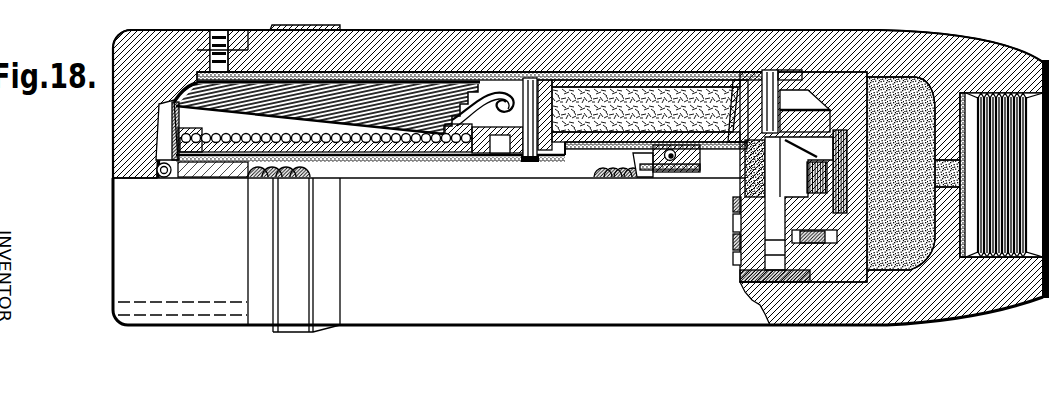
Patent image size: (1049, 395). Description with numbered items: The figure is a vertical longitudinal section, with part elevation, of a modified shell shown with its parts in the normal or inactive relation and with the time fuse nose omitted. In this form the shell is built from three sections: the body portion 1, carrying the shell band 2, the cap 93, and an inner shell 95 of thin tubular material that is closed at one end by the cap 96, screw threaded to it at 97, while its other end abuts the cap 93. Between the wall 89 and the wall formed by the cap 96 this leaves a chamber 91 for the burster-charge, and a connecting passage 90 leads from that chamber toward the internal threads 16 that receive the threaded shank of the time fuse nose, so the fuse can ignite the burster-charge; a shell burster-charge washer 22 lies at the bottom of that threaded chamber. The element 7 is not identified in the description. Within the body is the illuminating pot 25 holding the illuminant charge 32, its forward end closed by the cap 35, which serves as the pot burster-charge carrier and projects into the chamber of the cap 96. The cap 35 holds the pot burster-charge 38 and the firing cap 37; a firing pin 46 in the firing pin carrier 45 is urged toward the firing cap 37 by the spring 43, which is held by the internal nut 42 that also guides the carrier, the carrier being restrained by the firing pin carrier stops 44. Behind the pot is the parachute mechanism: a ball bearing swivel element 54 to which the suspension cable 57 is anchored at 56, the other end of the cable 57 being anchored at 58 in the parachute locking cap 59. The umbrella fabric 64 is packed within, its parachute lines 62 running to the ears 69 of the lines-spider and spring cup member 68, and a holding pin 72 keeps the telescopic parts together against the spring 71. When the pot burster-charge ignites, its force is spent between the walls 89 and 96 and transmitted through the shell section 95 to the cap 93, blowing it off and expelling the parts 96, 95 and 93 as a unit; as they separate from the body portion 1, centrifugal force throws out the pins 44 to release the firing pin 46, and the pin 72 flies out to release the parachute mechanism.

The body portion of the shell 1 is at (288, 255).
The shell band 2 is at (345, 42).
The head wall 7 is at (358, 50).
The internal threads 16 is at (1004, 159).
The shell burster-charge washer 22 is at (965, 243).
The illuminating pot 25 is at (576, 72).
The illuminant charge 32 is at (674, 72).
The cap (pot burster-charge carrier) 35 is at (745, 243).
The firing cap 37 is at (745, 208).
The pot burster-charge 38 is at (745, 225).
The internal nut 42 is at (760, 275).
The spring 43 is at (800, 243).
The firing pin carrier stops 44 is at (769, 70).
The firing pin carrier 45 is at (766, 172).
The firing pin 46 is at (887, 243).
The ball bearing swivel element 54 is at (652, 173).
The cable anchorage 56 is at (710, 163).
The suspension cable 57 is at (601, 172).
The cable anchorage 58 is at (156, 173).
The parachute locking cap 59 is at (165, 144).
The parachute lines 62 is at (487, 82).
The umbrella fabric 64 is at (428, 98).
The parachute lines-spider and spring cup member 68 is at (472, 153).
The ears 69 is at (508, 130).
The spring 71 is at (416, 160).
The holding pin 72 is at (529, 164).
The wall 89 is at (943, 167).
The connecting passage 90 is at (965, 160).
The burster-charge chamber 91 is at (886, 76).
The cap 93 is at (117, 123).
The inner shell 95 is at (618, 72).
The cap 96 is at (833, 72).
The screw threads 97 is at (801, 70).